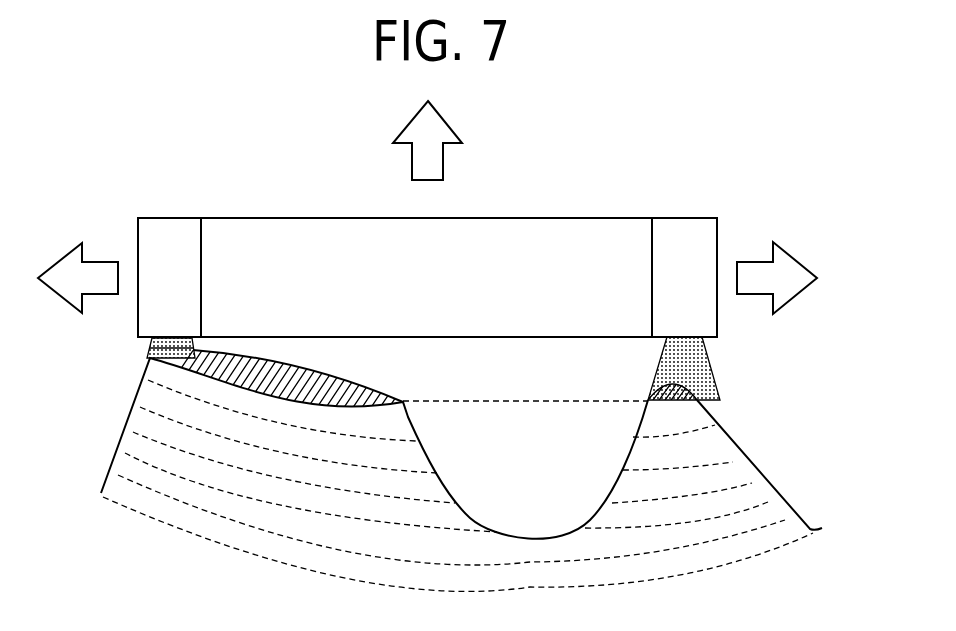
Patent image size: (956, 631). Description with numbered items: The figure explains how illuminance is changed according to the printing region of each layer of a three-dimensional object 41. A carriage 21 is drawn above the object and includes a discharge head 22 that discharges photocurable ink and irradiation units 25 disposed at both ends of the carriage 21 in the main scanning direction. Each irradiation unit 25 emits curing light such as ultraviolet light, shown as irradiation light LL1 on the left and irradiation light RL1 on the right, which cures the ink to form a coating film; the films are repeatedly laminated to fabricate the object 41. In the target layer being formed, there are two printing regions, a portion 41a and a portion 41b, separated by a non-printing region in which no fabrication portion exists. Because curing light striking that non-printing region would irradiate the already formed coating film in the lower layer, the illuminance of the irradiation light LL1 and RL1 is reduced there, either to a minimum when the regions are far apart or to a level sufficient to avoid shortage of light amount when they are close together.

The carriage 21 is at (625, 185).
The discharge head 22 is at (527, 237).
The irradiation unit 25 is at (172, 218).
The three-dimensional object 41 is at (752, 462).
The portion 41a is at (357, 387).
The portion 41b is at (700, 383).
The irradiation light LL1 is at (150, 345).
The irradiation light RL1 is at (697, 363).